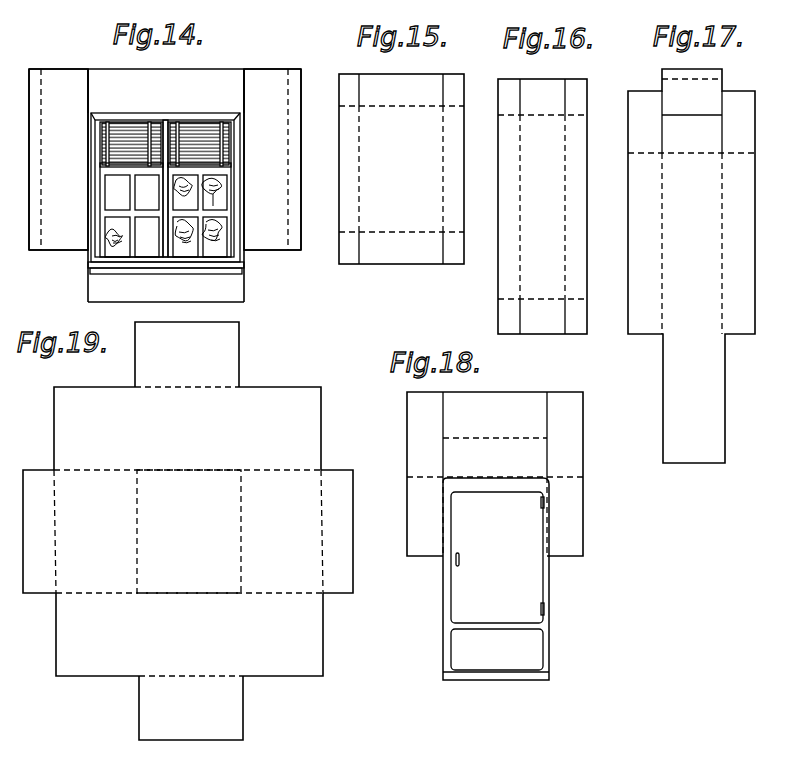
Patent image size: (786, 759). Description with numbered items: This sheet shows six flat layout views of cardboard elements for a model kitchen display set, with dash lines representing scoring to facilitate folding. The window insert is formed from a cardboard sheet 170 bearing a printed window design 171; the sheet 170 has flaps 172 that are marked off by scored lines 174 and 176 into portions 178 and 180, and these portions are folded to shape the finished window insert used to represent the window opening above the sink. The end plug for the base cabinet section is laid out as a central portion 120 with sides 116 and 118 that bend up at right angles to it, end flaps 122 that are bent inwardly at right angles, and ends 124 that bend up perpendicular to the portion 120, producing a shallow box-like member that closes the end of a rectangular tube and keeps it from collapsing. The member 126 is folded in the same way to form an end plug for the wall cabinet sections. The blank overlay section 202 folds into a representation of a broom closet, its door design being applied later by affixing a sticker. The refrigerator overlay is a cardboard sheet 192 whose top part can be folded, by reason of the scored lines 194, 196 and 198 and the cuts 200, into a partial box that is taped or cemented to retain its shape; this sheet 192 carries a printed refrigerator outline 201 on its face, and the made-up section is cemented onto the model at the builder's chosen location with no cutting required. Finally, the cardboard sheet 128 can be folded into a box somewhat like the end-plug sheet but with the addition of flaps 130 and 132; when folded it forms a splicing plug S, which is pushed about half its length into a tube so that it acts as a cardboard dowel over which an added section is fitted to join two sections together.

In FIG. 14, the cardboard sheet 170 is at (215, 98).
In FIG. 14, the window design 171 is at (134, 140).
In FIG. 14, the flaps 172 is at (70, 101).
In FIG. 14, the scored line 174 is at (88, 104).
In FIG. 14, the scored line 176 is at (41, 172).
In FIG. 14, the portion 178 is at (58, 250).
In FIG. 14, the portion 180 is at (37, 231).
In FIG. 15, the side 116 is at (350, 156).
In FIG. 15, the side 118 is at (451, 209).
In FIG. 15, the central portion 120 is at (409, 194).
In FIG. 15, the end flaps 122 is at (348, 88).
In FIG. 15, the ends 124 is at (414, 99).
In FIG. 16, the member 126 is at (555, 222).
In FIG. 17, the overlay section 202 is at (703, 257).
In FIG. 18, the cardboard sheet 192 is at (504, 533).
In FIG. 18, the scored line 194 is at (443, 538).
In FIG. 18, the scored line 196 is at (478, 477).
In FIG. 18, the scored line 198 is at (467, 438).
In FIG. 18, the cuts 200 is at (547, 410).
In FIG. 18, the refrigerator outline 201 is at (540, 538).
In FIG. 19, the cardboard sheet 128 is at (196, 539).
In FIG. 19, the flaps 130 is at (194, 369).
In FIG. 19, the flaps 132 is at (39, 583).
In FIG. 19, the splicing plug S is at (190, 584).